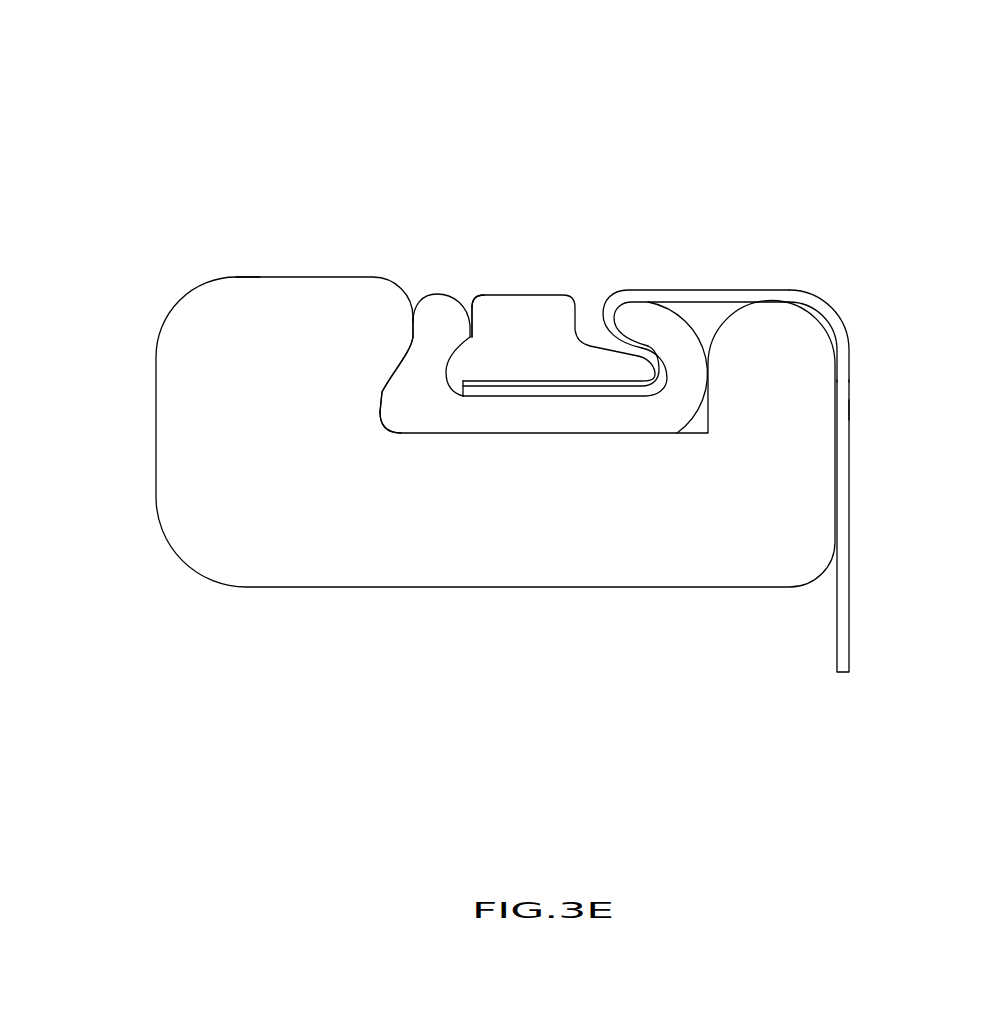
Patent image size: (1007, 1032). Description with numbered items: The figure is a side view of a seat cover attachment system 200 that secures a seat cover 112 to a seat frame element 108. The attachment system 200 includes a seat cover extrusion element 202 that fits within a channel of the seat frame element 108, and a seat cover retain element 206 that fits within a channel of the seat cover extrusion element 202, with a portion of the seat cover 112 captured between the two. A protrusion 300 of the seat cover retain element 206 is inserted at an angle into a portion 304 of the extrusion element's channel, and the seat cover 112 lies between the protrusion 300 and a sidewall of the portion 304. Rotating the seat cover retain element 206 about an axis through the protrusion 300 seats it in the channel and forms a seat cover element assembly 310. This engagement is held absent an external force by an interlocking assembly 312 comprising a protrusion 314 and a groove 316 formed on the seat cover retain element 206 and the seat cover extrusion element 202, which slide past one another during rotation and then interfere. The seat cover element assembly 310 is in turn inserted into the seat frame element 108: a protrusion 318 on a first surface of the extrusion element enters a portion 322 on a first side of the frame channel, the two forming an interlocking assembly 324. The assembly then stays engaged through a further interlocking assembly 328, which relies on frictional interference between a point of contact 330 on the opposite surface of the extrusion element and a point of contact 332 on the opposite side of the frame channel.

The attachment system 200 is at (165, 81).
The seat frame element 108 is at (438, 568).
The seat cover 112 is at (850, 592).
The seat cover extrusion element 202 is at (430, 317).
The seat cover retain element 206 is at (525, 308).
The protrusion 300 is at (642, 372).
The portion of the channel 304 is at (642, 357).
The seat cover element assembly 310 is at (640, 197).
The interlocking assembly 312 is at (447, 187).
The protrusion 314 is at (463, 332).
The groove 316 is at (483, 332).
The protrusion 318 is at (420, 380).
The portion of the channel 322 is at (383, 391).
The interlocking assembly 324 is at (293, 195).
The interlocking assembly 328 is at (887, 239).
The point of contact 330 is at (717, 368).
The point of contact 332 is at (647, 342).